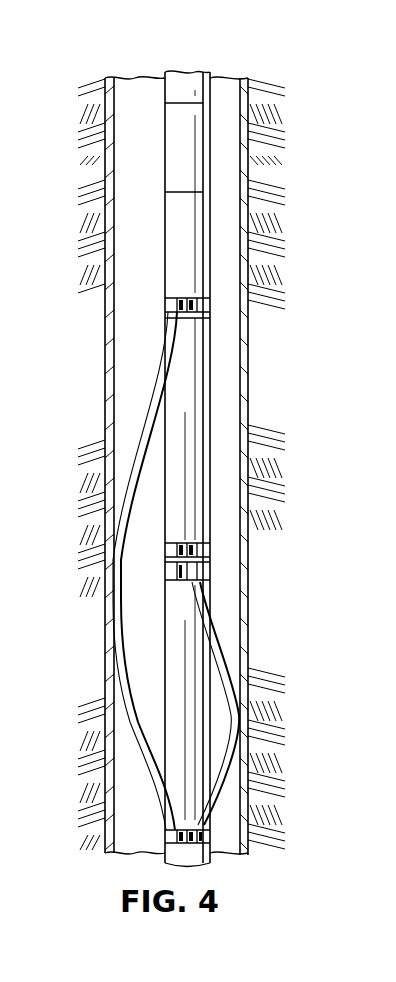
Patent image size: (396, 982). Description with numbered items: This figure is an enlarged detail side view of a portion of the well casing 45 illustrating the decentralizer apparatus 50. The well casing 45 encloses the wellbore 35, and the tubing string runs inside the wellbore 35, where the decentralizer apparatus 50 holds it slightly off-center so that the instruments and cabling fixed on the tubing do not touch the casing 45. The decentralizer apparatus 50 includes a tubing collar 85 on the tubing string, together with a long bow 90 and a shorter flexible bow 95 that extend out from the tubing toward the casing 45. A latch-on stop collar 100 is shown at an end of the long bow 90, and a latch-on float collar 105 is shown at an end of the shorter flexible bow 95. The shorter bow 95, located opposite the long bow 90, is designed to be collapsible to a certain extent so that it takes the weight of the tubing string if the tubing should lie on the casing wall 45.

The wellbore 35 is at (153, 122).
The well casing 45 is at (108, 163).
The decentralizer apparatus 50 is at (265, 463).
The tubing collar 85 is at (213, 153).
The long bow 90 is at (149, 443).
The shorter flexible bow 95 is at (232, 668).
The latch-on stop collar 100 is at (213, 307).
The latch-on float collar 105 is at (210, 573).